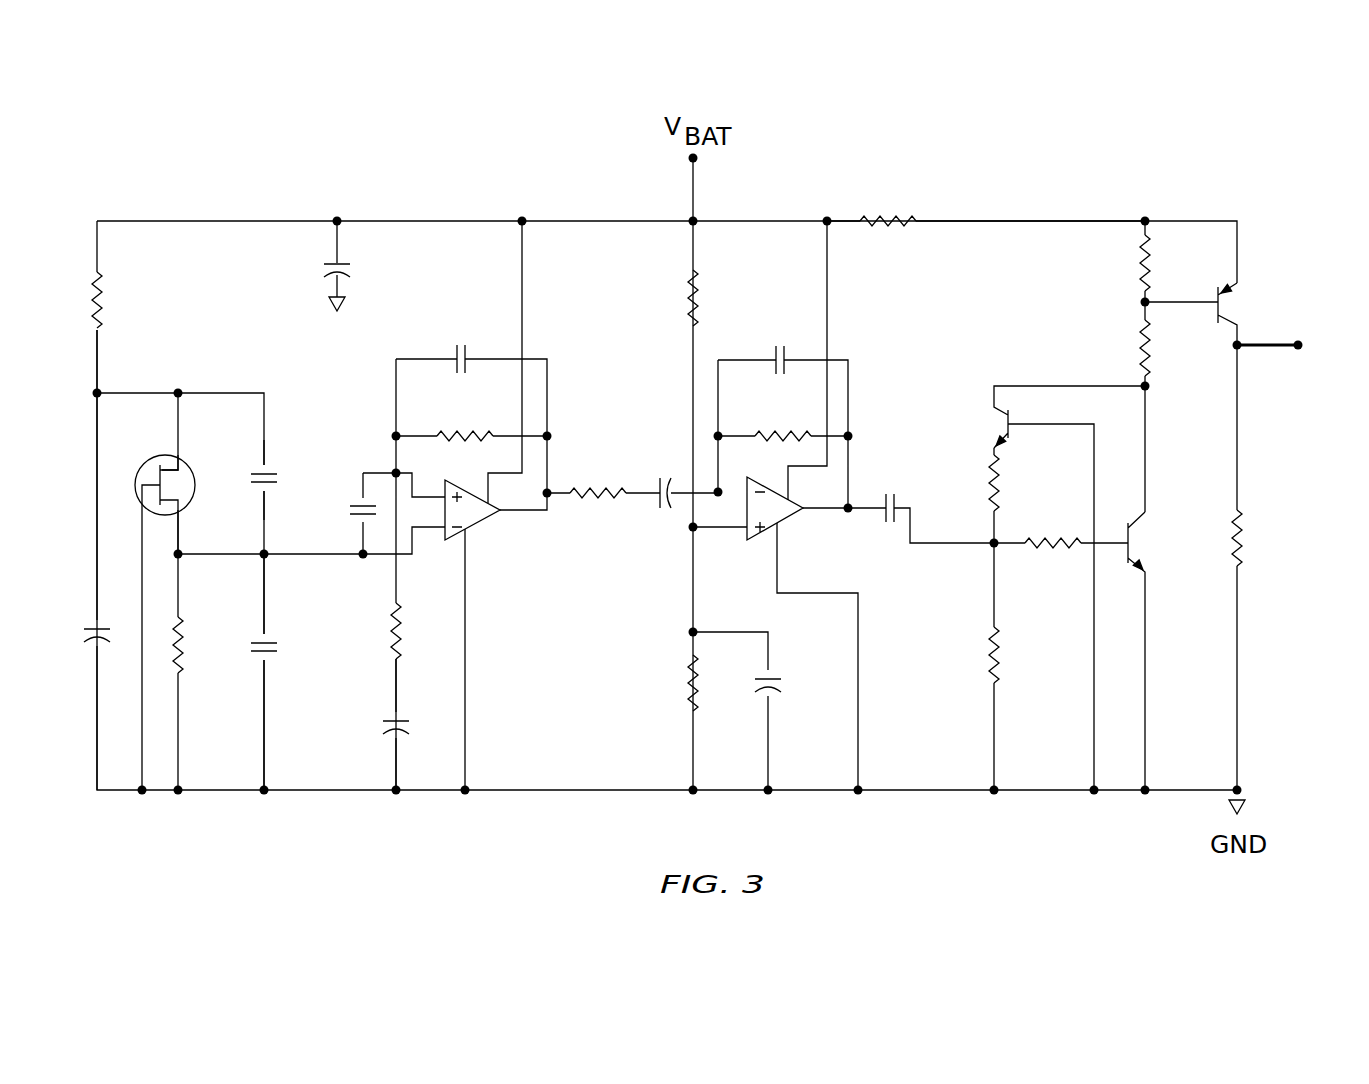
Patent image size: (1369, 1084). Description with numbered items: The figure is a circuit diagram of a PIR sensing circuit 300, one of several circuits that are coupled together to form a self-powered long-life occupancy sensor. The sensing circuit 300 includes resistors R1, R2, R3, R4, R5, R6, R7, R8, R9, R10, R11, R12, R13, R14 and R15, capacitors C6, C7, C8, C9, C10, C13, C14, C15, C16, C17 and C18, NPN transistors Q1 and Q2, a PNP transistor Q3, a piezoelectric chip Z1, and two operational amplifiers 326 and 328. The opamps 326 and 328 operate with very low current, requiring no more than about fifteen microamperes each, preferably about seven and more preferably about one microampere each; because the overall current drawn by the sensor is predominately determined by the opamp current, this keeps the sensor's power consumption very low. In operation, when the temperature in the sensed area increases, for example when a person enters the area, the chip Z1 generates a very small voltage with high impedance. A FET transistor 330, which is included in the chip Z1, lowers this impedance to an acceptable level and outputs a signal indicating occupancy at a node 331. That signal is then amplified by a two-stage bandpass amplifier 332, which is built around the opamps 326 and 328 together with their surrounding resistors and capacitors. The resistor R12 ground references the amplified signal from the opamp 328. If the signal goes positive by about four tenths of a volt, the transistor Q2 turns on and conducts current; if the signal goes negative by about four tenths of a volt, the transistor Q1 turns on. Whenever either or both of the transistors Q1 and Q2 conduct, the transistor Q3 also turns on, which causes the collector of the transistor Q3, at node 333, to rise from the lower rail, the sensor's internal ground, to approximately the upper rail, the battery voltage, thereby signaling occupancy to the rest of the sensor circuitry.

The sensing circuit 300 is at (1195, 175).
The resistor R1 is at (103, 324).
The resistor R2 is at (183, 632).
The resistor R3 is at (382, 611).
The resistor R4 is at (464, 430).
The resistor R5 is at (602, 490).
The resistor R6 is at (690, 287).
The resistor R7 is at (685, 694).
The resistor R8 is at (785, 436).
The resistor R9 is at (882, 212).
The resistor R10 is at (1000, 488).
The resistor R11 is at (1058, 546).
The resistor R12 is at (990, 653).
The resistor R13 is at (1125, 270).
The resistor R14 is at (1175, 340).
The resistor R15 is at (1265, 526).
The capacitor C6 is at (662, 478).
The capacitor C7 is at (785, 680).
The capacitor C8 is at (84, 642).
The capacitor C9 is at (352, 270).
The capacitor C10 is at (381, 722).
The capacitor C13 is at (278, 478).
The capacitor C14 is at (276, 656).
The capacitor C15 is at (345, 505).
The capacitor C16 is at (459, 343).
The capacitor C17 is at (779, 344).
The capacitor C18 is at (890, 495).
The NPN transistor Q1 is at (1003, 425).
The NPN transistor Q2 is at (1146, 543).
The PNP transistor Q3 is at (1230, 305).
The piezoelectric chip Z1 is at (145, 472).
The operational amplifier 326 is at (472, 500).
The operational amplifier 328 is at (783, 512).
The FET transistor 330 is at (190, 474).
The node 331 is at (186, 550).
The two-stage bandpass amplifier 332 is at (752, 278).
The node 333 is at (1298, 348).